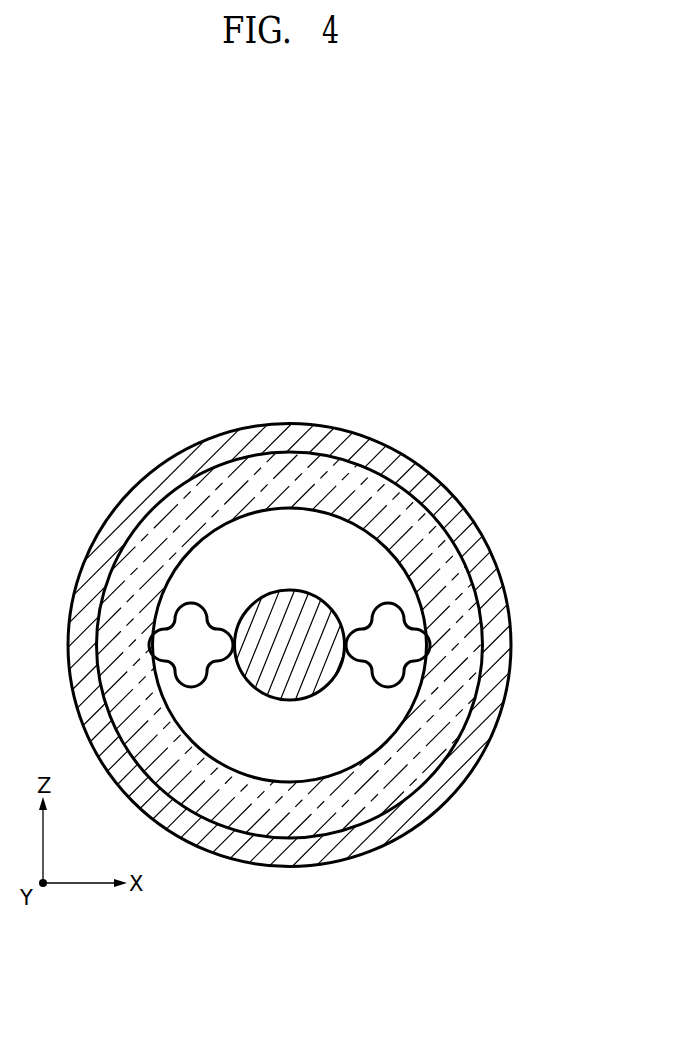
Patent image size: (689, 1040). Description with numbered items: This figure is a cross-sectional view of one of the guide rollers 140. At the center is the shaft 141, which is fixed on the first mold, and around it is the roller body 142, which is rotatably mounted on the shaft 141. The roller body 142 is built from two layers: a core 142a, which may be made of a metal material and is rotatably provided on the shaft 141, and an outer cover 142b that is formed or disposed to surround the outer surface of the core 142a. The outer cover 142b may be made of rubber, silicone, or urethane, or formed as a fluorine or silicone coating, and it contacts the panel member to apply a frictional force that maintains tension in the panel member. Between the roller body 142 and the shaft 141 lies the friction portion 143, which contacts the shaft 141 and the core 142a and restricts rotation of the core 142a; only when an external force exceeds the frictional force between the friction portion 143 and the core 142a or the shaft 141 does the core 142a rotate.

The guide roller 140 is at (118, 422).
The shaft 141 is at (283, 602).
The roller body 142 is at (308, 631).
The core 142a is at (408, 458).
The outer cover 142b is at (455, 495).
The friction portion 143 is at (420, 645).